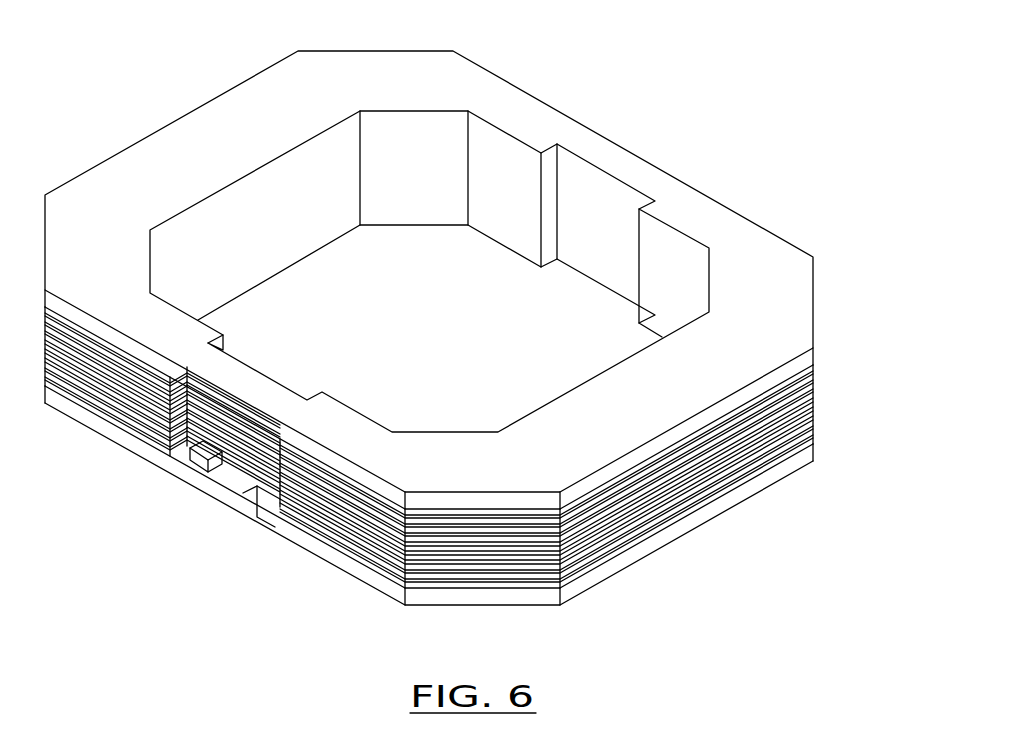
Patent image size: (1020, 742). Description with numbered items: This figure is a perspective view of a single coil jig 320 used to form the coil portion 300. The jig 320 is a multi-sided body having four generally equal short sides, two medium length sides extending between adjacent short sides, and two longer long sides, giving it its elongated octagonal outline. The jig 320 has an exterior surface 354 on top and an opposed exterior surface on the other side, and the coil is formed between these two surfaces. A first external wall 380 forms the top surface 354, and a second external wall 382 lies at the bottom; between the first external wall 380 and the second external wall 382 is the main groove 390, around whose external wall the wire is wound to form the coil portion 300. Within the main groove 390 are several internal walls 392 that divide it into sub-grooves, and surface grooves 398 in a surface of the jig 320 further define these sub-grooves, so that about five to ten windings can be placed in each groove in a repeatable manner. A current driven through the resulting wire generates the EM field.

The coil portion 300 is at (473, 316).
The jig 320 is at (472, 280).
The exterior surface 354 is at (756, 257).
The first external wall 380 is at (812, 348).
The main groove 390 is at (471, 447).
The second external wall 382 is at (813, 450).
The internal wall 392 is at (722, 490).
The surface groove 398 is at (192, 437).